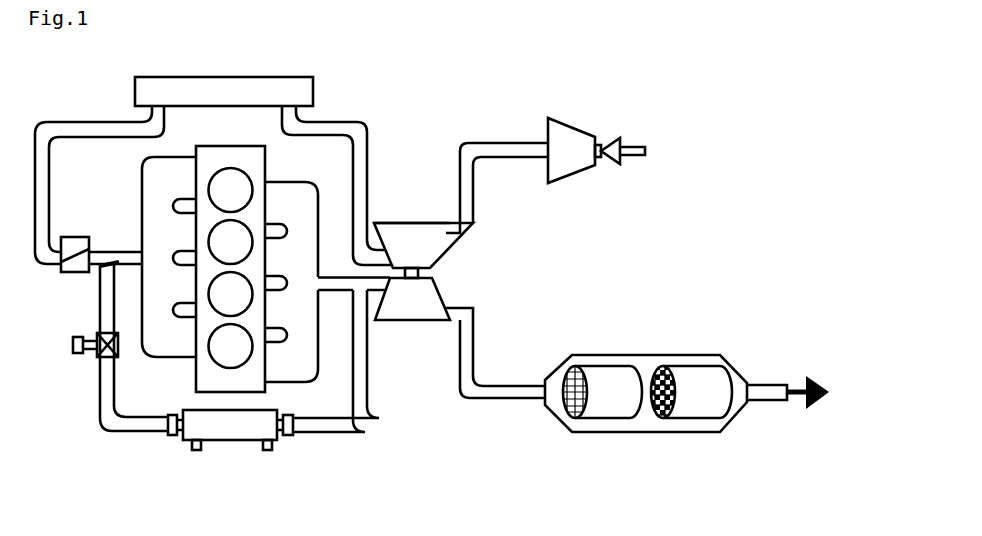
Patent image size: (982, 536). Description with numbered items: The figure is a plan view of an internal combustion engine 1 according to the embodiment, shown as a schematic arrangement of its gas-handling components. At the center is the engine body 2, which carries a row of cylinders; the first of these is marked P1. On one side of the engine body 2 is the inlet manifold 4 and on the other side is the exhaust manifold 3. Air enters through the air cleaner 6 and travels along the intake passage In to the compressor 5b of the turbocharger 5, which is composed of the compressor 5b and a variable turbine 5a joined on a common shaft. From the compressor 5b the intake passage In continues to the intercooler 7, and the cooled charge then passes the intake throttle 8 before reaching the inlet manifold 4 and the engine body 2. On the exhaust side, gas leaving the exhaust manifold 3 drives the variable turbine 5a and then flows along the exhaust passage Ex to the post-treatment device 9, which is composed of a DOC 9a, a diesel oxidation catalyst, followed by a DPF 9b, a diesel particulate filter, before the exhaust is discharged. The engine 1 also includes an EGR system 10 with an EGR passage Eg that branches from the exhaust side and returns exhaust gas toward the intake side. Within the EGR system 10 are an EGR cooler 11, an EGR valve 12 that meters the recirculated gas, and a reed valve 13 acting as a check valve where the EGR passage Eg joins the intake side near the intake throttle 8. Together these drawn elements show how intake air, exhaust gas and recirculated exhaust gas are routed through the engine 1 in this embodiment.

The engine 1 is at (432, 150).
The engine body 2 is at (248, 266).
The exhaust manifold 3 is at (308, 210).
The inlet manifold 4 is at (156, 167).
The turbocharger 5 is at (436, 273).
The variable turbine 5a is at (412, 321).
The compressor 5b is at (412, 222).
The air cleaner 6 is at (560, 130).
The intercooler 7 is at (315, 92).
The intake throttle 8 is at (88, 237).
The post-treatment device 9 is at (687, 351).
The DOC 9a is at (599, 378).
The DPF 9b is at (697, 377).
The EGR system 10 is at (291, 450).
The EGR cooler 11 is at (233, 432).
The EGR valve 12 is at (100, 357).
The reed valve 13 is at (100, 268).
The first cylinder P1 is at (245, 202).
The intake passage In is at (370, 150).
The exhaust passage Ex is at (493, 404).
The EGR passage Eg is at (132, 430).